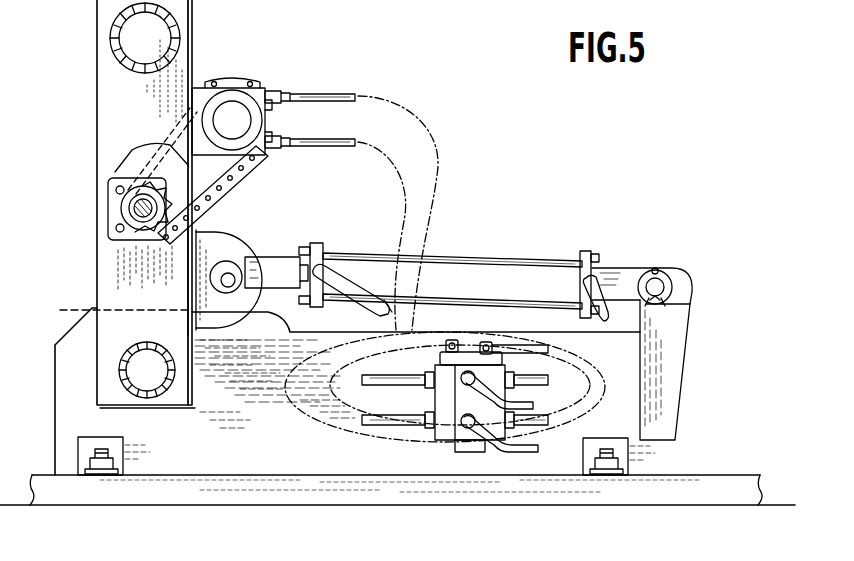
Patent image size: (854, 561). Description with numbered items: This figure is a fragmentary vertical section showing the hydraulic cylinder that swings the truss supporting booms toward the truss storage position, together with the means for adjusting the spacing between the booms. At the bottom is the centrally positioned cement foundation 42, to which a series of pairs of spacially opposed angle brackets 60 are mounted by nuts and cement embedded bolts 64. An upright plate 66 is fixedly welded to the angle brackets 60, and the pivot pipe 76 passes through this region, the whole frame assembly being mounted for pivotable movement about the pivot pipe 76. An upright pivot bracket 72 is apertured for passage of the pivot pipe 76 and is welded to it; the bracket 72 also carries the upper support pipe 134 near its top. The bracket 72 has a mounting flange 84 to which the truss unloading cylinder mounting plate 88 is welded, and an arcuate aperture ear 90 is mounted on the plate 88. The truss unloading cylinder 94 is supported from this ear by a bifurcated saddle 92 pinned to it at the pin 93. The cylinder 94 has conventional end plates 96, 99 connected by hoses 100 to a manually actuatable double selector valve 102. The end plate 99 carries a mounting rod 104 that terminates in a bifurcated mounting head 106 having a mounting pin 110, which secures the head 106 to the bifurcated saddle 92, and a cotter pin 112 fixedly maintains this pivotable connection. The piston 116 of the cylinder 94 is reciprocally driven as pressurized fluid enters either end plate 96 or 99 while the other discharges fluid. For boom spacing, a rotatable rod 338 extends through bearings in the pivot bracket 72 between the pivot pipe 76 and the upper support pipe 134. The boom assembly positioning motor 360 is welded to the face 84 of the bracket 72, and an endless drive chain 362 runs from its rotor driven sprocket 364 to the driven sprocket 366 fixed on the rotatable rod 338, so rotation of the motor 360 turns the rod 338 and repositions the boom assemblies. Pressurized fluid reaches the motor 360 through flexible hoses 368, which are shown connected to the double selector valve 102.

The cement foundation 42 is at (336, 493).
The angle bracket 60 is at (96, 437).
The cement embedded bolt 64 is at (110, 455).
The upright plate 66 is at (240, 445).
The upright pivot bracket 72 is at (126, 117).
The pivot pipe 76 is at (120, 362).
The mounting flange 84 is at (190, 44).
The truss unloading cylinder mounting plate 88 is at (214, 236).
The arcuate aperture ear 90 is at (226, 240).
The bifurcated saddle 92 is at (684, 356).
The pin 93 is at (236, 266).
The truss unloading cylinder 94 is at (458, 256).
The end plate 96 is at (316, 243).
The end plate 99 is at (586, 251).
The hose 100 is at (346, 270).
The double selector valve 102 is at (436, 440).
The mounting rod 104 is at (636, 268).
The bifurcated mounting head 106 is at (672, 290).
The mounting pin 110 is at (668, 284).
The cotter pin 112 is at (668, 305).
The piston 116 is at (280, 257).
The upper support pipe 134 is at (110, 34).
The rotatable rod 338 is at (110, 204).
The boom assembly positioning motor 360 is at (236, 104).
The endless drive chain 362 is at (238, 172).
The rotor driven sprocket 364 is at (162, 195).
The driven sprocket 366 is at (283, 138).
The flexible hose 368 is at (358, 118).